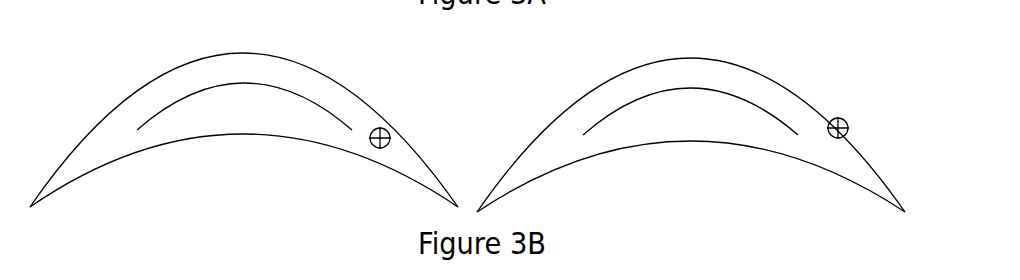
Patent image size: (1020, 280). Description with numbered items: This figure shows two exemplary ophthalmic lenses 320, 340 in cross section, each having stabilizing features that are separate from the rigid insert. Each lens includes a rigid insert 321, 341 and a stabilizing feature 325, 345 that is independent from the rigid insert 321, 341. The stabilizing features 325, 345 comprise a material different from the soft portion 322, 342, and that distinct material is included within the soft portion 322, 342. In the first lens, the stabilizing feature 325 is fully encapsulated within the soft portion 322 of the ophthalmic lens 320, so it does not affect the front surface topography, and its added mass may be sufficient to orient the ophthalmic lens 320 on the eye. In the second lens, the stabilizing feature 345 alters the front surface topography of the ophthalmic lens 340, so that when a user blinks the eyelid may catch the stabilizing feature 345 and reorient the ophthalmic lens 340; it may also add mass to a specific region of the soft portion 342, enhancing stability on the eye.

The ophthalmic lens 320 is at (244, 104).
The rigid insert 321 is at (231, 82).
The soft portion 322 is at (113, 137).
The stabilizing feature 325 is at (380, 127).
The ophthalmic lens 340 is at (691, 113).
The rigid insert 341 is at (677, 97).
The soft portion 342 is at (557, 148).
The stabilizing feature 345 is at (838, 117).